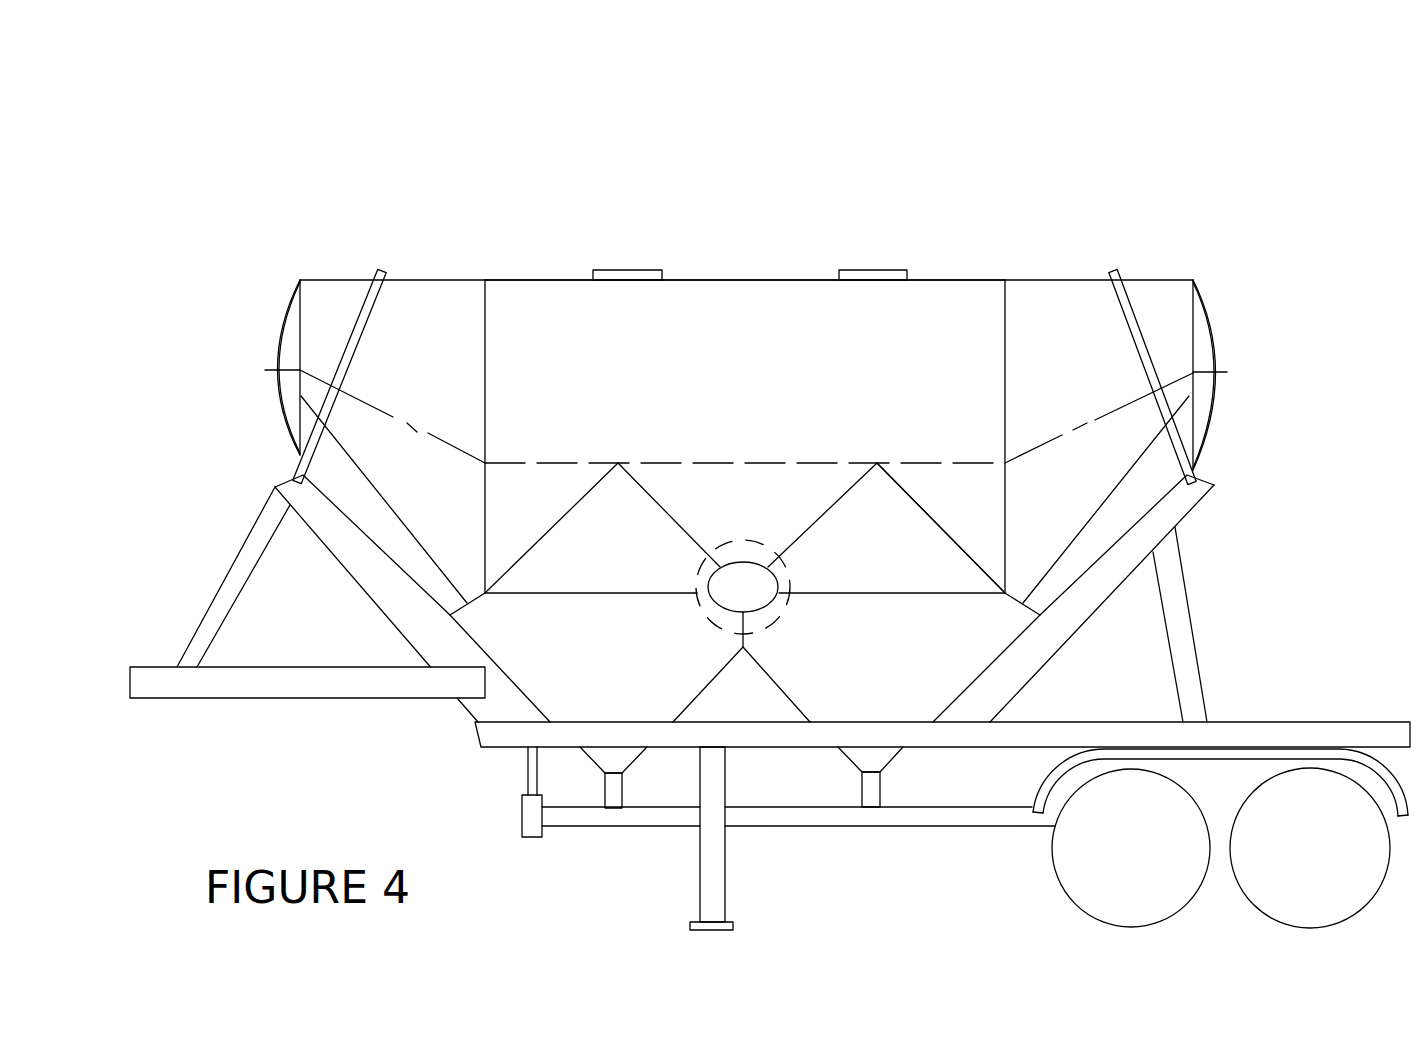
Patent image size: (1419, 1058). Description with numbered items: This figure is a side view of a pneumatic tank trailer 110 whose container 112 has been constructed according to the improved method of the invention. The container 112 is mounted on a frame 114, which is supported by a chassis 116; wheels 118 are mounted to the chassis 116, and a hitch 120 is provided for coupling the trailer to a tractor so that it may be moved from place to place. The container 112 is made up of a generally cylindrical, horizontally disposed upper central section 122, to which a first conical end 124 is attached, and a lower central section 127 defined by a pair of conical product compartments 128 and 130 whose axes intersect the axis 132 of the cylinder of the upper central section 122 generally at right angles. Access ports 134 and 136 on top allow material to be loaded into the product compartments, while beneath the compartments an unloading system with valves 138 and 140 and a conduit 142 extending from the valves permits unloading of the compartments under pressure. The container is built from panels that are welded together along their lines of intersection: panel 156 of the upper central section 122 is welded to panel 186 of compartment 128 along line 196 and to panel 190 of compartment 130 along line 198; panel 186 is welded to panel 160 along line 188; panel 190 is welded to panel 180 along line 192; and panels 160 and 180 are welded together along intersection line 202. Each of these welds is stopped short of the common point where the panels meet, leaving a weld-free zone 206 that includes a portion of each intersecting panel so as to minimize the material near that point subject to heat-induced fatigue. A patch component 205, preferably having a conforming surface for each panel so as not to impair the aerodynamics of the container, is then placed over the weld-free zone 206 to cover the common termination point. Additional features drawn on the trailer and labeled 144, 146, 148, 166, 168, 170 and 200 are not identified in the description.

The pneumatic tank trailer 110 is at (883, 151).
The container 112 is at (566, 277).
The frame 114 is at (1065, 622).
The chassis 116 is at (1045, 733).
The wheels 118 is at (1089, 873).
The hitch 120 is at (152, 686).
The upper central section 122 is at (757, 277).
The first conical end 124 is at (348, 298).
The lower central section 127 is at (789, 706).
The conical product compartment 128 is at (515, 686).
The conical product compartment 130 is at (970, 682).
The axis 132 is at (738, 463).
The access port 134 is at (640, 268).
The access port 136 is at (887, 268).
The valve 138 is at (618, 797).
The valve 140 is at (870, 782).
The conduit 142 is at (758, 817).
The front end section 144 is at (418, 378).
The front strut 146 is at (345, 487).
The front end cap 148 is at (290, 360).
The panel 156 is at (726, 341).
The panel 160 is at (608, 650).
The rear end section 166 is at (1058, 371).
The rear brace bar 168 is at (1150, 490).
The rear end cap 170 is at (1207, 352).
The panel 180 is at (856, 685).
The panel 186 is at (583, 543).
The weld line 188 is at (603, 593).
The panel 190 is at (861, 526).
The weld line 192 is at (877, 593).
The weld line 196 is at (654, 497).
The weld line 198 is at (840, 499).
The rear partition outer wall 200 is at (912, 503).
The intersection line 202 is at (750, 647).
The patch component 205 is at (723, 600).
The weld-free zone 206 is at (738, 541).